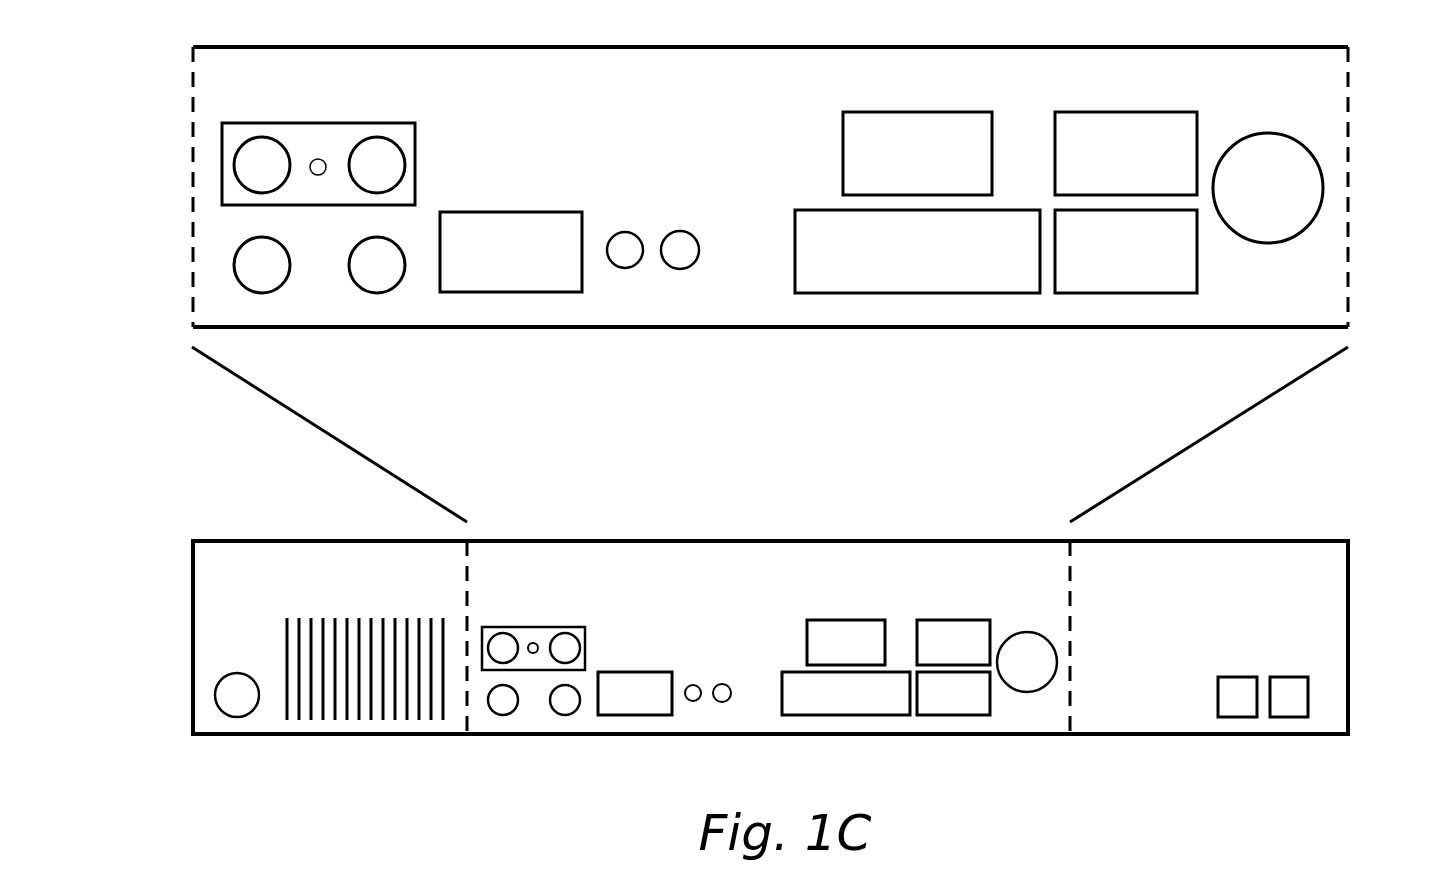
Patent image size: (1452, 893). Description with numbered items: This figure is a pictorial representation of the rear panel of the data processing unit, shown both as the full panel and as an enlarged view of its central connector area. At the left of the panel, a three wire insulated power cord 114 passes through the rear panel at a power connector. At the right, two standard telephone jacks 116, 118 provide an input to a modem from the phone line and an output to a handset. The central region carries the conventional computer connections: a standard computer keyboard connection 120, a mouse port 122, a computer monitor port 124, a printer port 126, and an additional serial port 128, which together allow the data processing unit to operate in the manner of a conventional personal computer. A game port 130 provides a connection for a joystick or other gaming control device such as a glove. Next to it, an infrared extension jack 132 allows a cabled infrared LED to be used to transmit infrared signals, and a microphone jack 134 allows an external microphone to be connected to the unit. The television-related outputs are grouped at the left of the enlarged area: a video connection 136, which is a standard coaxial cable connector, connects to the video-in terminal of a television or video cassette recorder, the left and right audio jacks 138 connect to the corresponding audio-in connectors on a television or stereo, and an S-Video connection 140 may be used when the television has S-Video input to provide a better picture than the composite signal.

The power cord 114 is at (215, 700).
The telephone jack 116 is at (1238, 677).
The telephone jack 118 is at (1293, 677).
The computer keyboard connection 120 is at (1324, 185).
The mouse port 122 is at (1163, 112).
The computer monitor port 124 is at (957, 112).
The printer port 126 is at (848, 293).
The serial port 128 is at (1110, 293).
The game port 130 is at (545, 212).
The infrared extension jack 132 is at (628, 232).
The microphone jack 134 is at (700, 255).
The video connection 136 is at (405, 165).
The left and right audio jacks 138 is at (237, 240).
The S-Video connection 140 is at (360, 238).